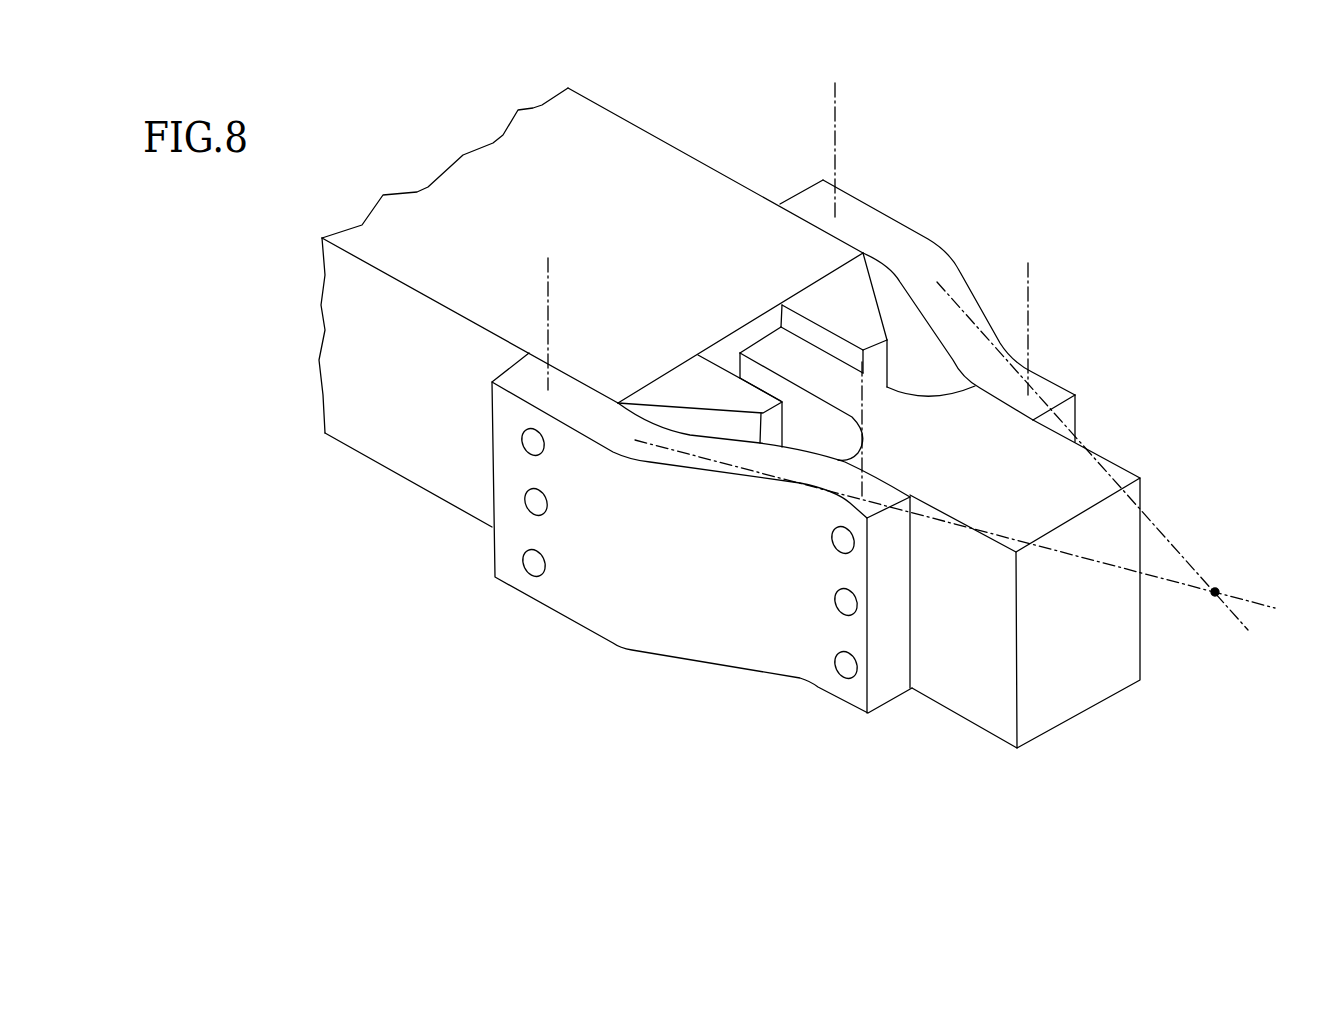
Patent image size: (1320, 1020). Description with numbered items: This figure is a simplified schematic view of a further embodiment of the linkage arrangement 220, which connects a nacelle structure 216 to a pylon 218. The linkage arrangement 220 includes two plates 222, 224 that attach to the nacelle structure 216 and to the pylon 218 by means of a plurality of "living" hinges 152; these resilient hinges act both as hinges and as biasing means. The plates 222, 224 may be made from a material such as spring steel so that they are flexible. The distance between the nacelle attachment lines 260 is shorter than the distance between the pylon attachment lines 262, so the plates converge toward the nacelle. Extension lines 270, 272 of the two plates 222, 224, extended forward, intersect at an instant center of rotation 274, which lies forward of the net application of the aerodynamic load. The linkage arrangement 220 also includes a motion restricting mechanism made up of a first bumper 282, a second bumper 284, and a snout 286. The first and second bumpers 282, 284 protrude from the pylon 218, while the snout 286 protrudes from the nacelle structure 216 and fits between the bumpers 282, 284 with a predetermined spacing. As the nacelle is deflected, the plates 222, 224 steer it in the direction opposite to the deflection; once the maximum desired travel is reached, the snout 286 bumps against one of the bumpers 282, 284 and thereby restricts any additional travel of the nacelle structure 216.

The living hinges 152 is at (533, 567).
The nacelle structure 216 is at (1012, 621).
The pylon 218 is at (347, 427).
The linkage arrangement 220 is at (973, 152).
The plate 222 is at (658, 632).
The plate 224 is at (932, 257).
The nacelle attachment lines 260 is at (1028, 287).
The pylon attachment lines 262 is at (835, 93).
The extension line 270 is at (1130, 568).
The inclined axis 272 is at (1162, 532).
The instant center of rotation 274 is at (1215, 592).
The first bumper 282 is at (828, 287).
The second bumper 284 is at (685, 378).
The snout 286 is at (772, 345).